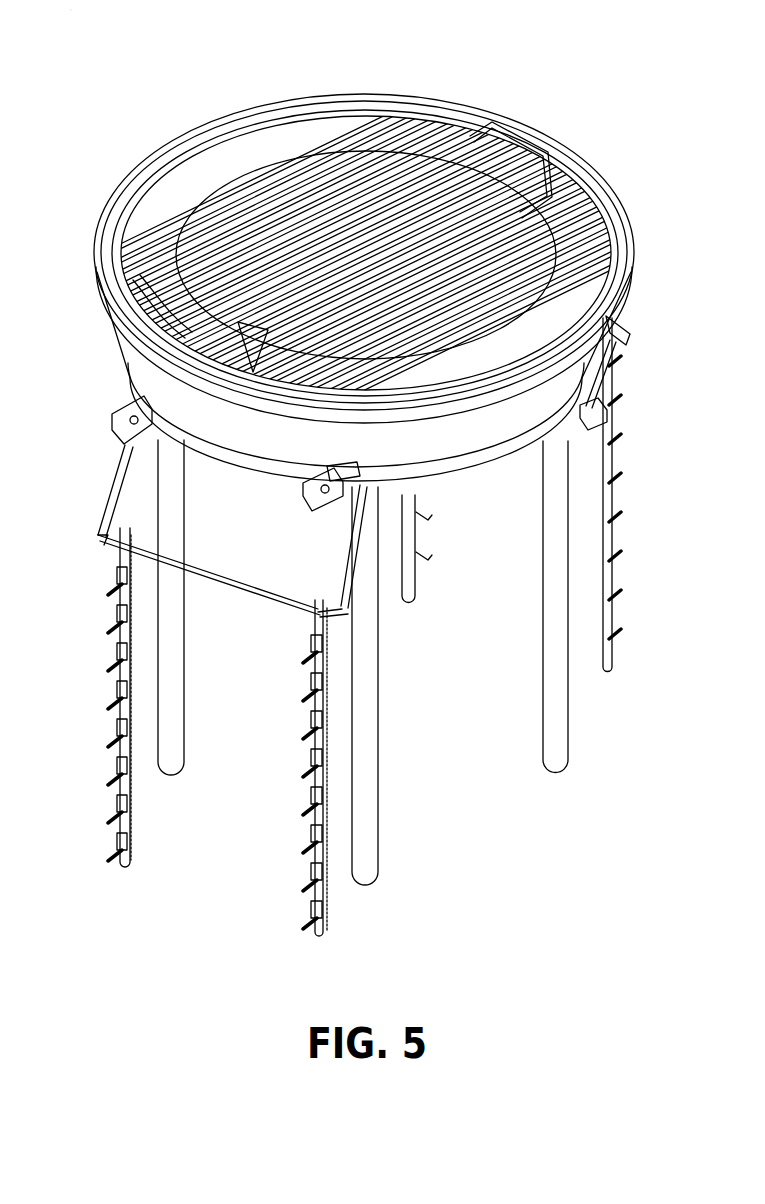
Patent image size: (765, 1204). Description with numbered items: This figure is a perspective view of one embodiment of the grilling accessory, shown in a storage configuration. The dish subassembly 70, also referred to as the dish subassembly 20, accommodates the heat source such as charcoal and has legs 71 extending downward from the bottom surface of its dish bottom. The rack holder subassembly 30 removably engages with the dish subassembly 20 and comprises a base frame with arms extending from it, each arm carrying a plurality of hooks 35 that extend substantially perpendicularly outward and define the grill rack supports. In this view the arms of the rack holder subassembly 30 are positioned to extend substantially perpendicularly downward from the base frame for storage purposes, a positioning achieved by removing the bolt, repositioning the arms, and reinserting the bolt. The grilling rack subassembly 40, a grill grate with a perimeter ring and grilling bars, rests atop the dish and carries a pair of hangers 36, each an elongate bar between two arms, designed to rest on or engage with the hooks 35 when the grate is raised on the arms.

The dish subassembly 70 is at (200, 82).
The dish subassembly 20 is at (572, 130).
The grilling rack subassembly 40 is at (378, 104).
The legs 71 is at (543, 690).
The rack holder subassembly 30 is at (136, 820).
The hooks 35 is at (106, 552).
The hangers 36 is at (624, 324).